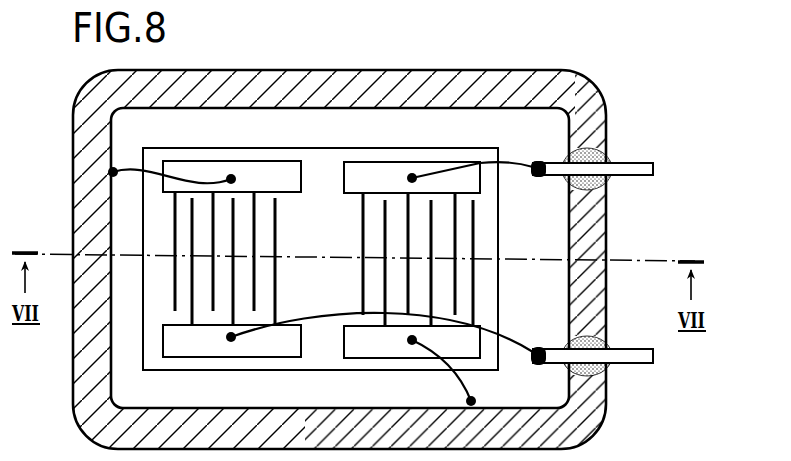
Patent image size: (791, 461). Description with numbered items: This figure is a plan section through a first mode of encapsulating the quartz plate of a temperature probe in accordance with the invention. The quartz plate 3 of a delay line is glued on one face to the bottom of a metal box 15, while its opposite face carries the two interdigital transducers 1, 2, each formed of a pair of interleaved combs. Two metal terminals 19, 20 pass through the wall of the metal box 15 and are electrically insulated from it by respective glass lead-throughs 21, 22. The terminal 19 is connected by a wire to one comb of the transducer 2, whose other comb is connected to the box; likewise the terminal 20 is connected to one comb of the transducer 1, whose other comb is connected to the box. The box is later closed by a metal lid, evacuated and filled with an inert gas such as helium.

The transducer 1 is at (282, 242).
The transducer 2 is at (480, 243).
The quartz plate 3 is at (143, 223).
The metal box 15 is at (80, 148).
The metal terminal 19 is at (622, 168).
The metal terminal 20 is at (643, 357).
The glass lead-through 21 is at (608, 187).
The glass lead-through 22 is at (608, 342).